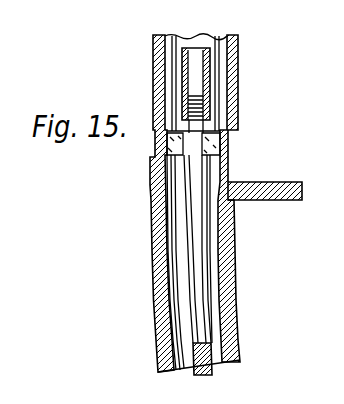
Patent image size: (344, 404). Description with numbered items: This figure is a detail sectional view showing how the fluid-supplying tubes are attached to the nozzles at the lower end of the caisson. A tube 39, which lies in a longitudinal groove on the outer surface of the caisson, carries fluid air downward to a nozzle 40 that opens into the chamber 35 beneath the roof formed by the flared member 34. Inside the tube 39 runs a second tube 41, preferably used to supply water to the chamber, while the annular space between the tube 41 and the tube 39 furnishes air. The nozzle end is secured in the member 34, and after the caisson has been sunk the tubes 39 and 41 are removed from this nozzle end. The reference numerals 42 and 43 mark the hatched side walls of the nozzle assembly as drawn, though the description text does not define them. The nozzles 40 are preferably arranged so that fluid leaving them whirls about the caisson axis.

The member 34 is at (273, 184).
The chamber 35 is at (150, 168).
The tube 39 is at (156, 55).
The nozzle 40 is at (147, 284).
The tube 41 is at (210, 65).
The outer sleeve wall 42 is at (157, 234).
The outer sleeve wall 43 is at (226, 262).